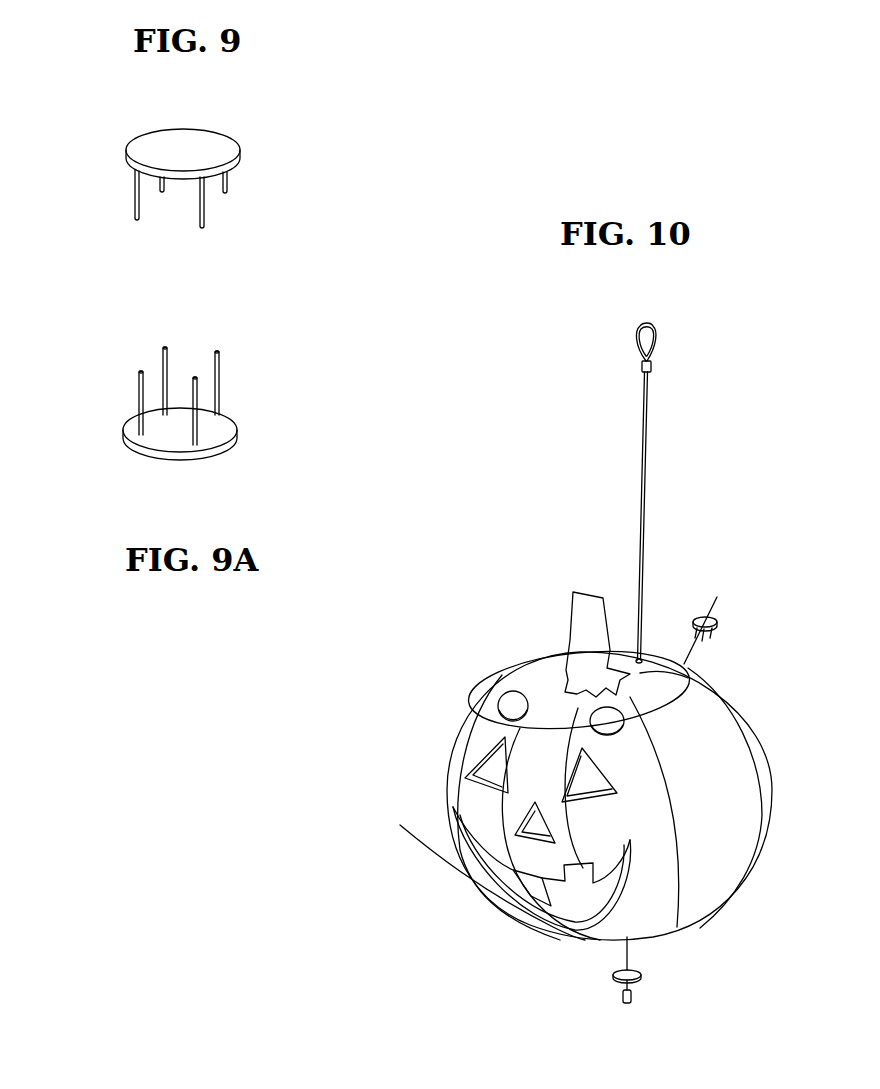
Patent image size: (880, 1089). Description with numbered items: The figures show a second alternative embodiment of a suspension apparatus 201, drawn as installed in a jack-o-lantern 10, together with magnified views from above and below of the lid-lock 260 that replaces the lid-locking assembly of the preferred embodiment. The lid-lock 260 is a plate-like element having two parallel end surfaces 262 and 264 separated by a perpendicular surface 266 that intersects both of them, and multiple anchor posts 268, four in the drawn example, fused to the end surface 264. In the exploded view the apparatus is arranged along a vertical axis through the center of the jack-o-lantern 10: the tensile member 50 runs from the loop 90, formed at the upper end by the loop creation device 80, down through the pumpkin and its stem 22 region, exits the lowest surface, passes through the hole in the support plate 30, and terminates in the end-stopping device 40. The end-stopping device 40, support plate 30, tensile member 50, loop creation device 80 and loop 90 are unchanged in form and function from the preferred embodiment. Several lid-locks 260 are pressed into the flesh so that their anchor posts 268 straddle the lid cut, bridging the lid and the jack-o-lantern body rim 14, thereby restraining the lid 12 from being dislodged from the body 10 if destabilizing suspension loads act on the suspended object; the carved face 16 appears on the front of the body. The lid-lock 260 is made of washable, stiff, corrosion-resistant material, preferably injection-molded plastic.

In FIG. 10, the jack-o-lantern 10 is at (725, 785).
In FIG. 10, the lid 12 is at (557, 677).
In FIG. 10, the jack-o-lantern body rim 14 is at (665, 710).
In FIG. 10, the carved face 16 is at (492, 767).
In FIG. 10, the stem 22 is at (588, 632).
In FIG. 10, the support plate 30 is at (640, 968).
In FIG. 10, the end-stopping device 40 is at (632, 998).
In FIG. 10, the tensile member 50 is at (639, 515).
In FIG. 10, the loop creation device 80 is at (652, 367).
In FIG. 10, the loop 90 is at (640, 331).
In FIG. 10, the suspension apparatus 201 is at (710, 486).
In FIG. 9, the lid-lock 260 is at (212, 157).
In FIG. 9A, the lid-lock 260 is at (233, 404).
In FIG. 10, the lid-lock 260 is at (515, 705).
In FIG. 9, the end surface 262 is at (158, 148).
In FIG. 9A, the end surface 264 is at (168, 432).
In FIG. 9, the perpendicular surface 266 is at (143, 170).
In FIG. 9, the anchor posts 268 is at (137, 205).
In FIG. 9A, the anchor posts 268 is at (165, 363).